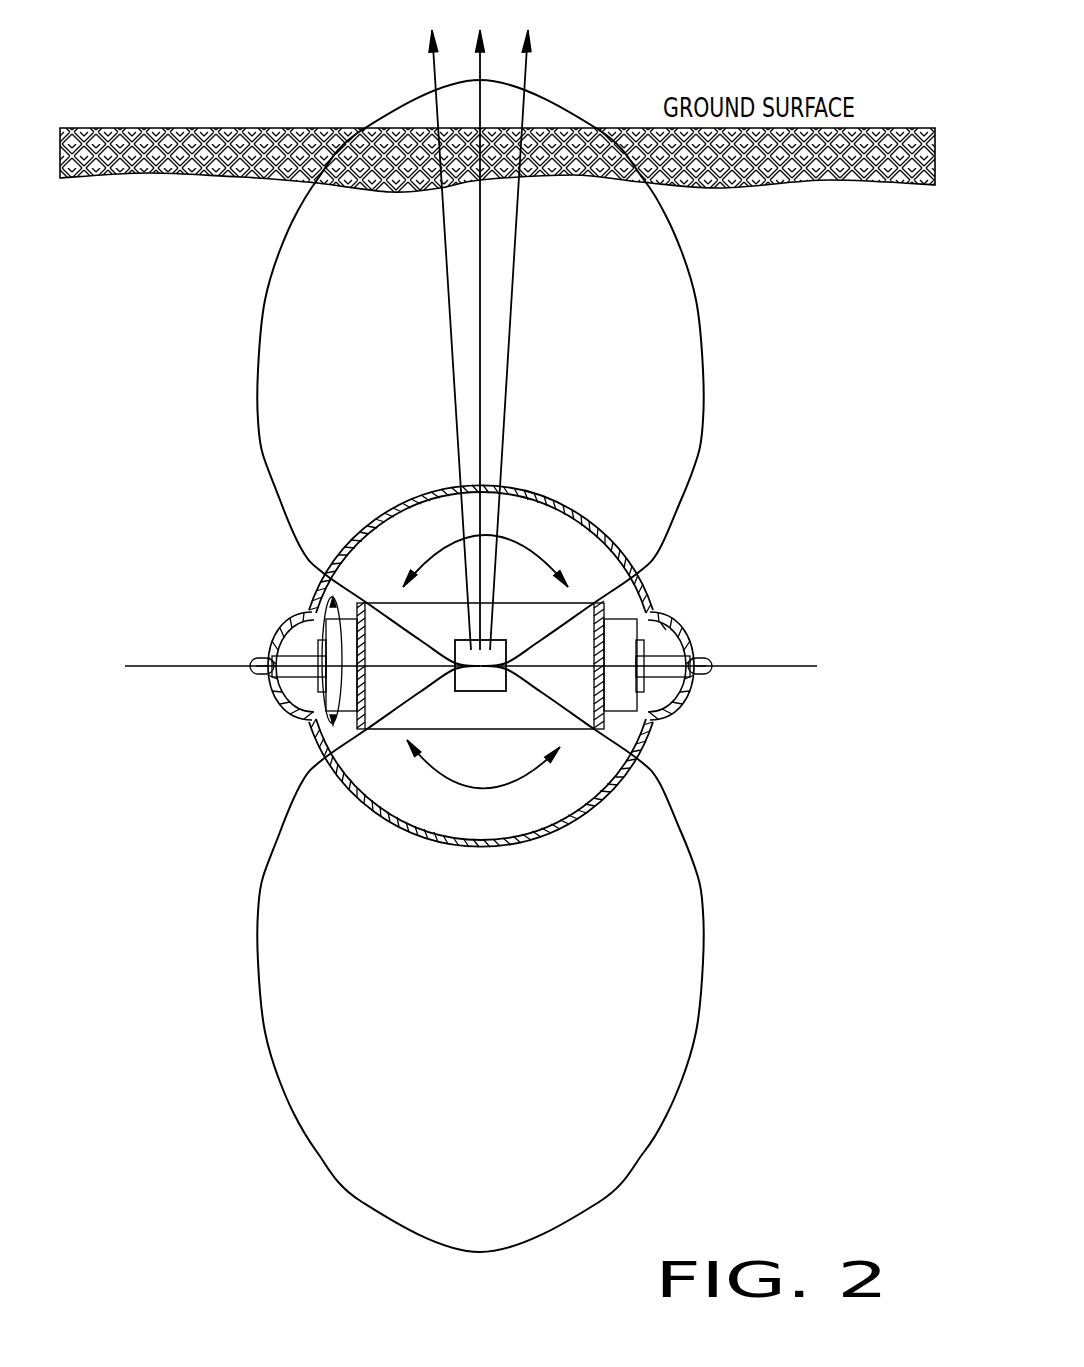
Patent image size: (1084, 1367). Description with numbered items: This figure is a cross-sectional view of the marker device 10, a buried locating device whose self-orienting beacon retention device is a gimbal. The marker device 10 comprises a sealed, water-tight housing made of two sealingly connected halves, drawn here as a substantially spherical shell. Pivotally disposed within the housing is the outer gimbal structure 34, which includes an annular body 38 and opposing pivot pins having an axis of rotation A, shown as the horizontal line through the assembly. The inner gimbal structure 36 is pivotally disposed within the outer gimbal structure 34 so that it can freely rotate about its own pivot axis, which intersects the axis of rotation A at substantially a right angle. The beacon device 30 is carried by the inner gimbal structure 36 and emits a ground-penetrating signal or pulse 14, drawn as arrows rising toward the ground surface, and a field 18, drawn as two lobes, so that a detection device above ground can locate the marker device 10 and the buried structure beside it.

The marker device 10 is at (481, 638).
The signal or pulse 14 is at (432, 108).
The field 18 is at (703, 345).
The beacon device 30 is at (490, 647).
The outer gimbal structure 34 is at (666, 626).
The inner gimbal structure 36 is at (378, 583).
The annular body 38 is at (315, 617).
The axis of rotation A is at (793, 665).